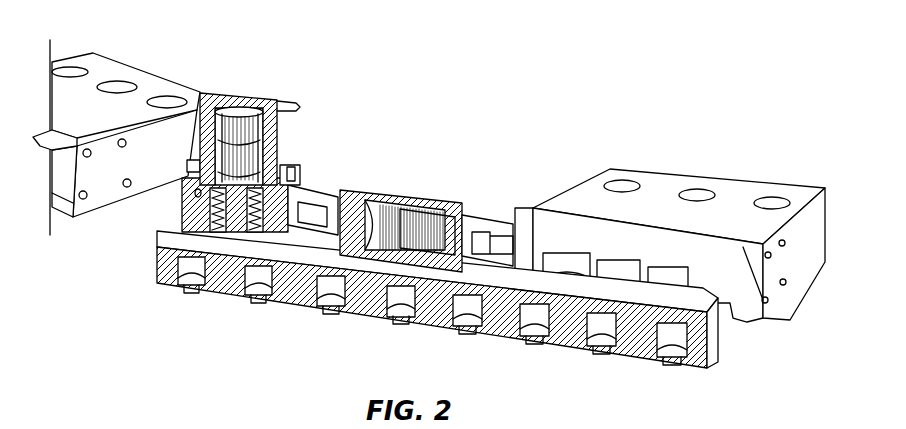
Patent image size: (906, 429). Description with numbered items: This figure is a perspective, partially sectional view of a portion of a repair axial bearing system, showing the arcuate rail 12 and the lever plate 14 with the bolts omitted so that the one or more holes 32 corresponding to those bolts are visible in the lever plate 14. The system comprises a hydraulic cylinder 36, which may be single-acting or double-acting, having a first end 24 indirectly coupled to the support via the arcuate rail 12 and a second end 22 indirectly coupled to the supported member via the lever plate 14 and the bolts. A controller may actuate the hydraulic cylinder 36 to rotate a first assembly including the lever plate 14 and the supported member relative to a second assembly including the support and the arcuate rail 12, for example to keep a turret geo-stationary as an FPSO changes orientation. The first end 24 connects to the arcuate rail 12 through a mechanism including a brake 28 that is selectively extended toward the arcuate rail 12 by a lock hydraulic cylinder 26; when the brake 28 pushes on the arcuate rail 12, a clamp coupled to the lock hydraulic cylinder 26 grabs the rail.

The arcuate rail 12 is at (213, 282).
The lever plate 14 is at (744, 199).
The second end 22 is at (497, 246).
The first end 24 is at (269, 232).
The lock hydraulic cylinder 26 is at (241, 146).
The brake 28 is at (237, 208).
The holes 32 is at (623, 178).
The hydraulic cylinder 36 is at (352, 235).